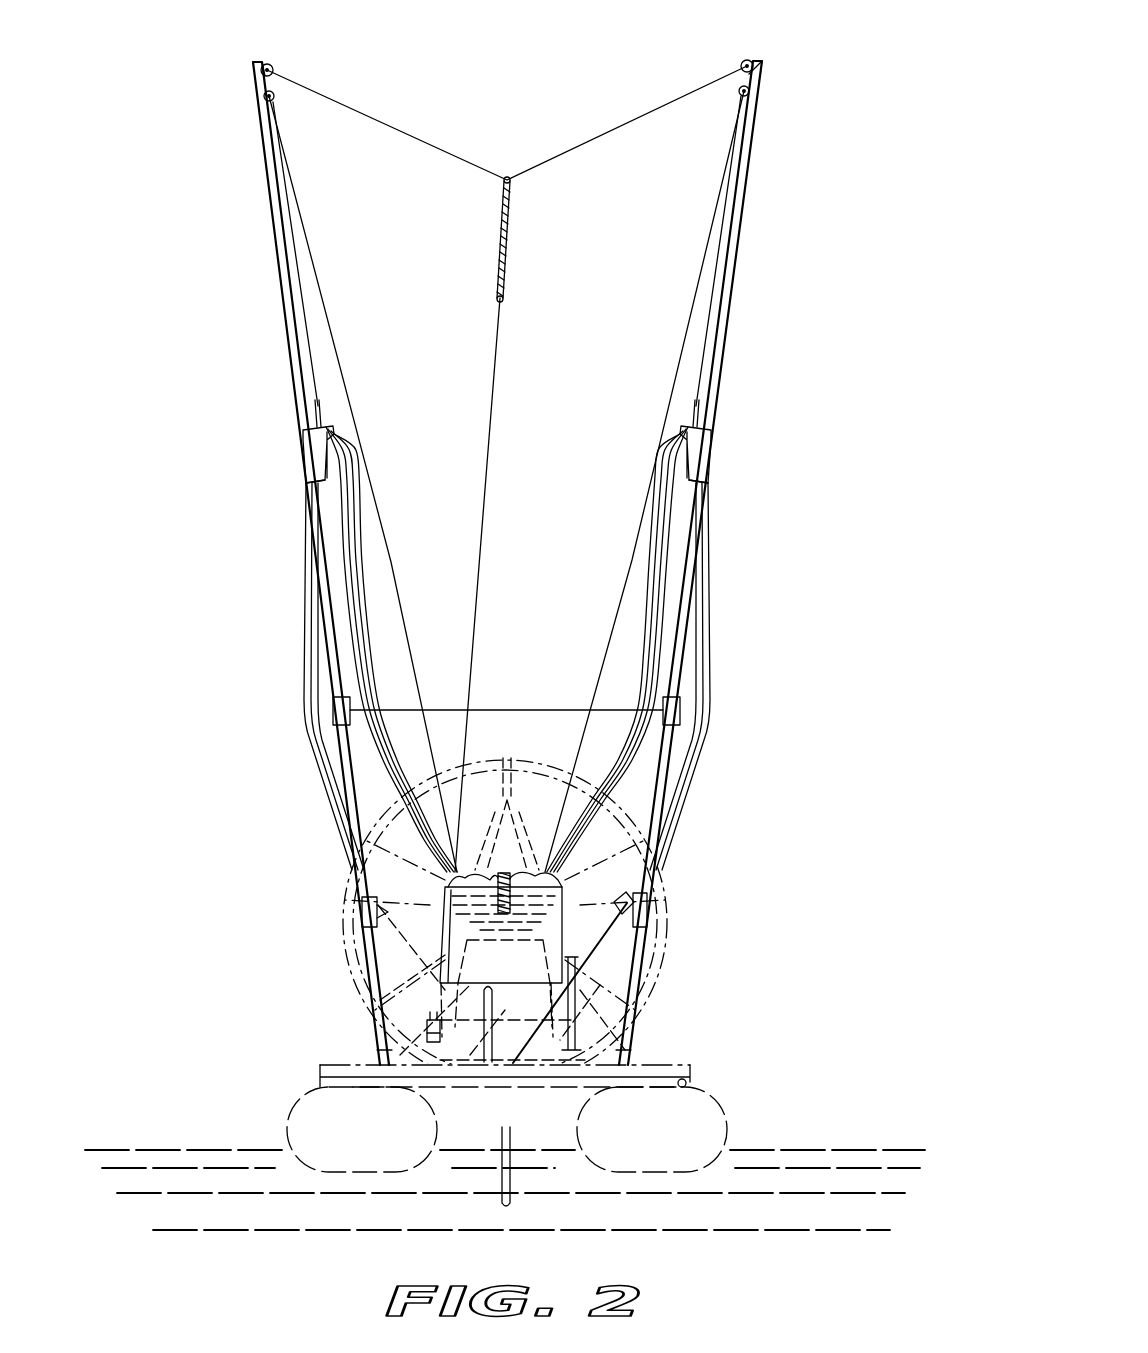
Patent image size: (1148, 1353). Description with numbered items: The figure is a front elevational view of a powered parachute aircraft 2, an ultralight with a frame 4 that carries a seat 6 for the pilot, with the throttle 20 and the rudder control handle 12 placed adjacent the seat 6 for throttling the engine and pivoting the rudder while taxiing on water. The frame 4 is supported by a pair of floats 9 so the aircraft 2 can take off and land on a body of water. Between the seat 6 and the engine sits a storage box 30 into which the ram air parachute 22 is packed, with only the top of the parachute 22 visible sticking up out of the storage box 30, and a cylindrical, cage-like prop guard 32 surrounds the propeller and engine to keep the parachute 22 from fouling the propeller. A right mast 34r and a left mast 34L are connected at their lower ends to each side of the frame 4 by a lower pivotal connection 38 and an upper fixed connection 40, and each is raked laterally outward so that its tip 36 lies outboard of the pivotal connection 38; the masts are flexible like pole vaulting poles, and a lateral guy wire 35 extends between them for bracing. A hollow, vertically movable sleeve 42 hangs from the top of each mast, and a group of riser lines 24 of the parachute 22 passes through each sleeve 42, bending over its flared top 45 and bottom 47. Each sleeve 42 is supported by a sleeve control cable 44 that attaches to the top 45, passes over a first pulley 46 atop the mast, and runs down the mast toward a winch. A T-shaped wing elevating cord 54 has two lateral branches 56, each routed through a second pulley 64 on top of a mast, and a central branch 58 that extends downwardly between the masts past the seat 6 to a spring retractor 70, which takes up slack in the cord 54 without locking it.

The aircraft 2 is at (777, 617).
The frame 4 is at (690, 1062).
The seat 6 is at (625, 938).
The floats 9 is at (292, 1102).
The rudder control handle 12 is at (600, 978).
The throttle 20 is at (494, 1000).
The ram air parachute 22 is at (522, 866).
The riser lines 24 is at (362, 548).
The storage box 30 is at (568, 884).
The prop guard 32 is at (630, 818).
The right mast 34r is at (270, 212).
The left mast 34L is at (746, 211).
The lateral guy wire 35 is at (448, 710).
The mast tip 36 is at (252, 64).
The lower pivotal connection 38 is at (384, 1068).
The upper fixed connection 40 is at (362, 914).
The sleeve 42 is at (308, 450).
The sleeve control cable 44 is at (302, 286).
The sleeve top 45 is at (312, 426).
The first pulley 46 is at (263, 98).
The sleeve bottom 47 is at (305, 483).
The wing elevating cord 54 is at (512, 316).
The lateral branches 56 is at (556, 132).
The central branch 58 is at (488, 462).
The second pulley 64 is at (273, 65).
The spring retractor 70 is at (427, 1030).